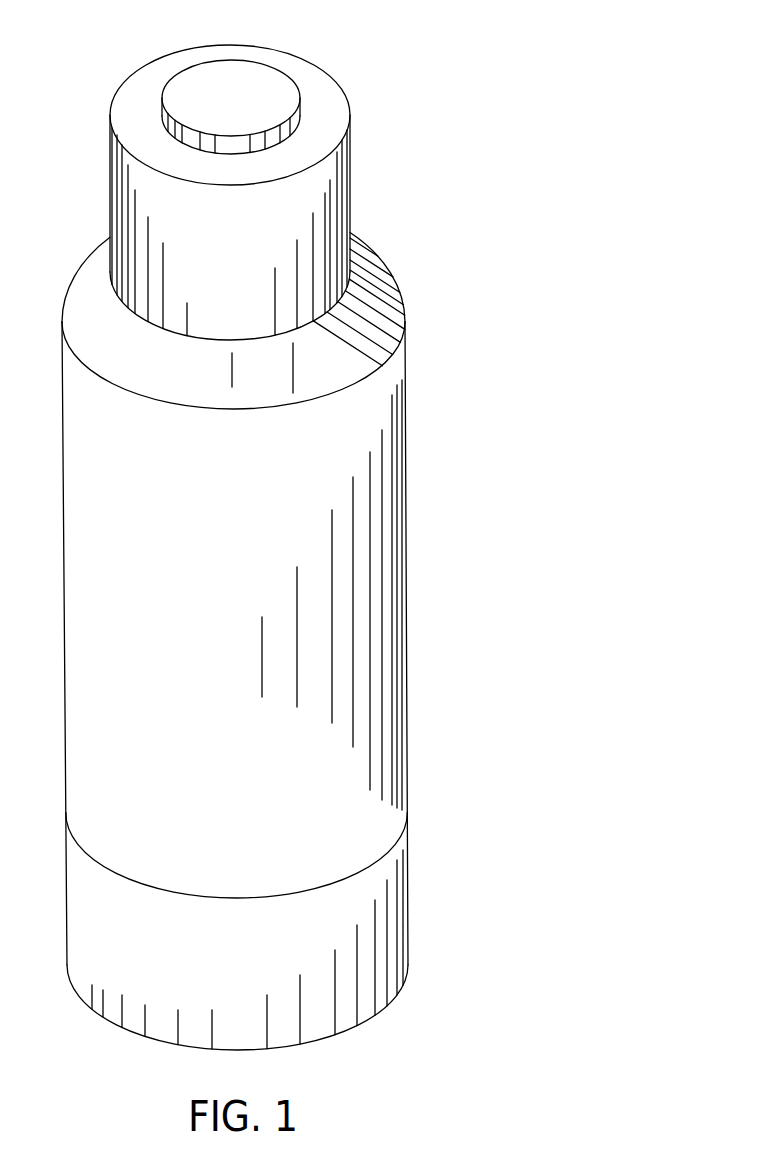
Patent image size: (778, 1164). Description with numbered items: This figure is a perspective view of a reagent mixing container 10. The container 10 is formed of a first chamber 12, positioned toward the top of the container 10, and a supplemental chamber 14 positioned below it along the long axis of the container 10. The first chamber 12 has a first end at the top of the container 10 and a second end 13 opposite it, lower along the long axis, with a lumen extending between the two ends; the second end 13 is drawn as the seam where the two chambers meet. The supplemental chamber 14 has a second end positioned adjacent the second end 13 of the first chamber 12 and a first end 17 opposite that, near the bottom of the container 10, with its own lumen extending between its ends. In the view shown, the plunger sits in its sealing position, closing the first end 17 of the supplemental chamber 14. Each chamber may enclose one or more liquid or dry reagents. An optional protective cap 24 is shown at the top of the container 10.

The reagent mixing container 10 is at (428, 46).
The first chamber 12 is at (434, 308).
The second end 13 is at (65, 805).
The supplemental chamber 14 is at (434, 805).
The first end 17 is at (406, 980).
The protective cap 24 is at (266, 73).